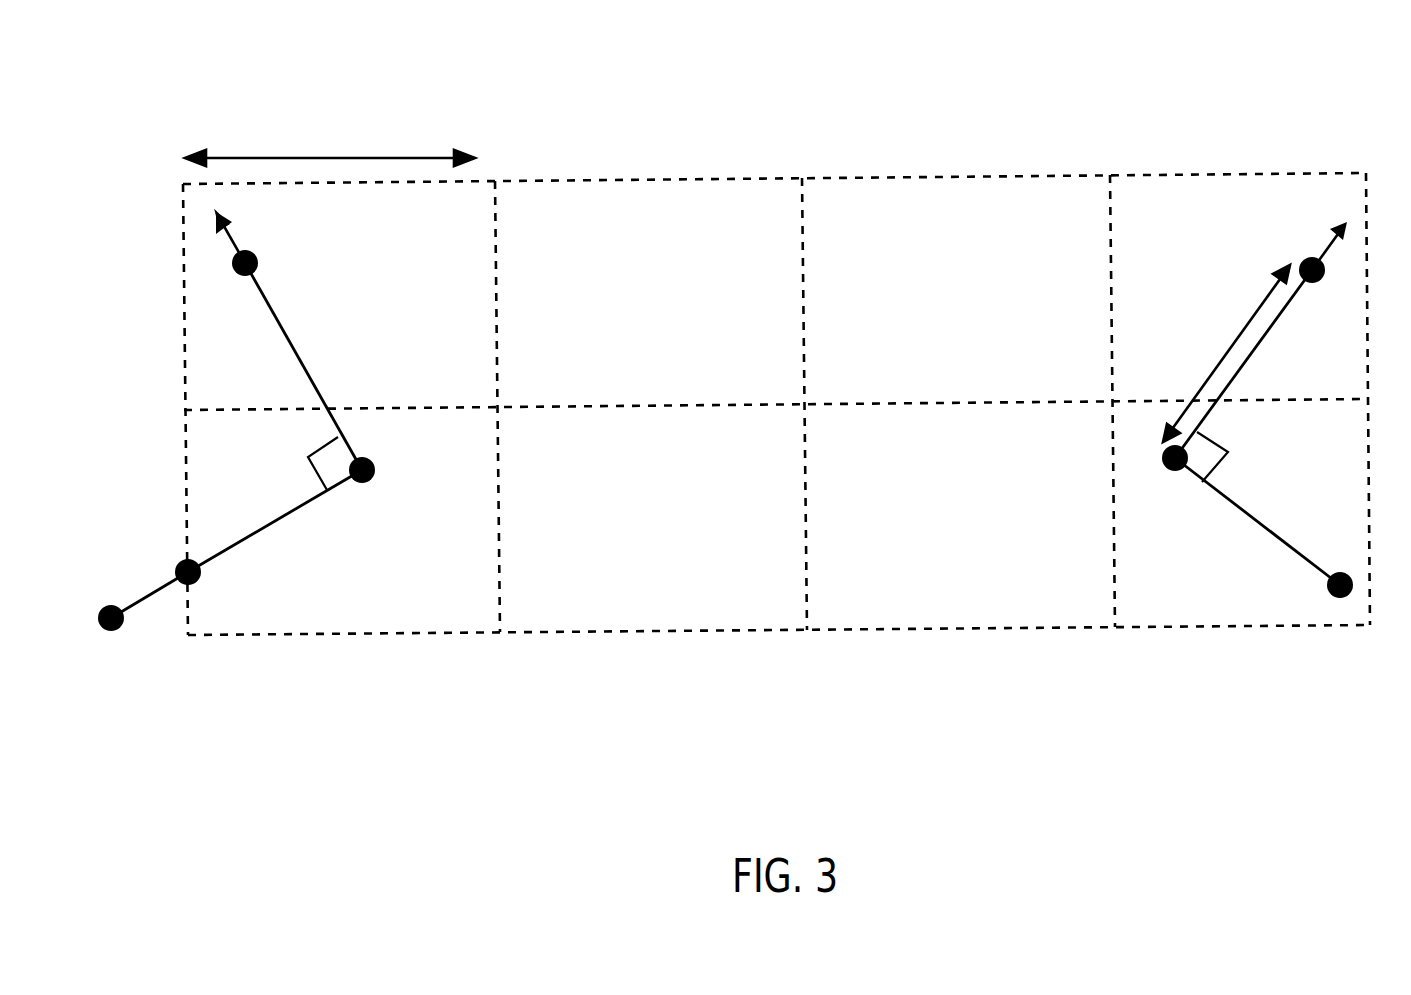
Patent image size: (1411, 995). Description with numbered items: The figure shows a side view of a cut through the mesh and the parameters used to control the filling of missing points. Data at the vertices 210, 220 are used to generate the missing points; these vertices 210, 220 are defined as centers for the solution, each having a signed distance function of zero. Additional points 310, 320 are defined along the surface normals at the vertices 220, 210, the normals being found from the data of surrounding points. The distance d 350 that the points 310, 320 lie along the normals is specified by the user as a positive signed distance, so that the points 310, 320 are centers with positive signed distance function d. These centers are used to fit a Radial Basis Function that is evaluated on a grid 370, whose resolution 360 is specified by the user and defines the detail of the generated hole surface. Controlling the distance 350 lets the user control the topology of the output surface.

The grid 370 is at (823, 180).
The resolution of the grid 360 is at (330, 138).
The additional point 320 is at (258, 252).
The vertex 210 is at (366, 482).
The distance d 350 is at (1207, 330).
The additional point 310 is at (1308, 284).
The vertex 220 is at (1165, 468).